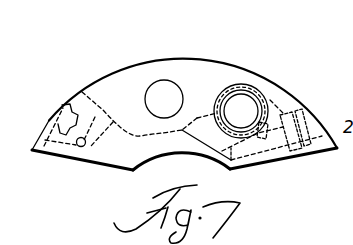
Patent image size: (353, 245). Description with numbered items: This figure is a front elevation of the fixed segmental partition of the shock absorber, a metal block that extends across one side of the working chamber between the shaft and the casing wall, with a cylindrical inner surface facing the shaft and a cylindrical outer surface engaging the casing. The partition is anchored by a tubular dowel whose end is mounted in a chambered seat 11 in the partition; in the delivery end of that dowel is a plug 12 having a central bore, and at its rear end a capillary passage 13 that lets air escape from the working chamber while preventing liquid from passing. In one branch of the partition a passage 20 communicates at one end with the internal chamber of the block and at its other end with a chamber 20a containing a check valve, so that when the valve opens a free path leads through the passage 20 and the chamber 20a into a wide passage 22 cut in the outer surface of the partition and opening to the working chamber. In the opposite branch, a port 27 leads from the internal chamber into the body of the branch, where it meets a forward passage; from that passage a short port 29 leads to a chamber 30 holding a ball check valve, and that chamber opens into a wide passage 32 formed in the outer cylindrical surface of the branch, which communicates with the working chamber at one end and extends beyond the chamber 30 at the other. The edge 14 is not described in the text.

The chambered seat 11 is at (100, 92).
The plug 12 is at (197, 118).
The capillary passage 13 is at (261, 156).
The left edge 14 is at (117, 158).
The passage 20 is at (221, 156).
The chamber 20a is at (291, 150).
The wide passage 22 is at (294, 117).
The port 27 is at (95, 112).
The short port 29 is at (71, 145).
The chamber 30 is at (63, 116).
The wide passage 32 is at (40, 141).